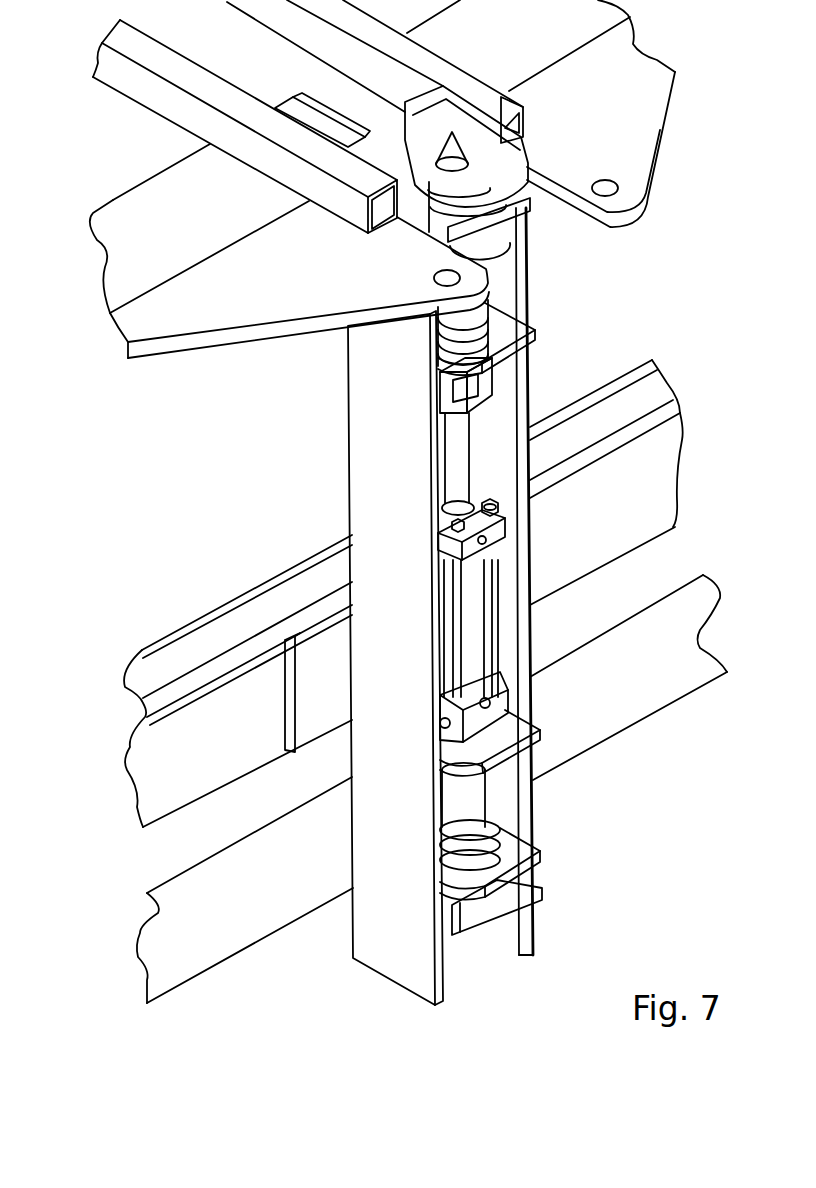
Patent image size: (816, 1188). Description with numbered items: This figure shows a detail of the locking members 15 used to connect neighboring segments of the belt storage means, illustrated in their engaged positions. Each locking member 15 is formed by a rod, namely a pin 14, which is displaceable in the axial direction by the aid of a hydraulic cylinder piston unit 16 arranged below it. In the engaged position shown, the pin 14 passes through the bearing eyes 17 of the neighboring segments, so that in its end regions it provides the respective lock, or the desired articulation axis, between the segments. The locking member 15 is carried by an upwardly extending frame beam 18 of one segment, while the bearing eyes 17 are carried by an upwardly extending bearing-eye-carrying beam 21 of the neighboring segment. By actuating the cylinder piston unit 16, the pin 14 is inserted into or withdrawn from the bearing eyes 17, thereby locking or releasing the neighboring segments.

The pin 14 is at (457, 453).
The locking member 15 is at (540, 557).
The cylinder piston unit 16 is at (478, 638).
The bearing eye 17 is at (480, 227).
The frame beam 18 is at (508, 385).
The bearing-eye-carrying beam 21 is at (402, 925).